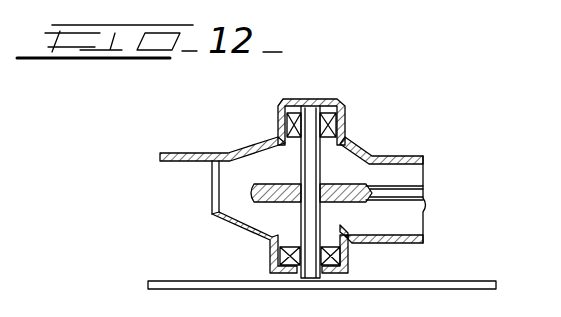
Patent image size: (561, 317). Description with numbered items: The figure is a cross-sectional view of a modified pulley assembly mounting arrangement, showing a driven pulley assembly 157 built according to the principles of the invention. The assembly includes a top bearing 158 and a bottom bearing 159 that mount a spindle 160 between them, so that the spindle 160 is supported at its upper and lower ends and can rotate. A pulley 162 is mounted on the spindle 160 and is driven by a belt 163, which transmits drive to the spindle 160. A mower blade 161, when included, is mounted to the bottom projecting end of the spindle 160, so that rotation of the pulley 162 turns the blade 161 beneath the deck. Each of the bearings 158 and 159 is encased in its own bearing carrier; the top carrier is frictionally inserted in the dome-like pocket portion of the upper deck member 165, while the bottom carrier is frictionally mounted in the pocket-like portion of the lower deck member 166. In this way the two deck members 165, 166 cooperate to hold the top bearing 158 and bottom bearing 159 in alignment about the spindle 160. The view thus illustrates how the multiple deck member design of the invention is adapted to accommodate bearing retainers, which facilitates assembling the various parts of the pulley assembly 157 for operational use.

The driven pulley assembly 157 is at (391, 130).
The top bearing 158 is at (343, 128).
The bottom bearing 159 is at (350, 258).
The spindle 160 is at (311, 160).
The mower blade 161 is at (459, 281).
The pulley 162 is at (293, 203).
The belt 163 is at (418, 190).
The upper deck member 165 is at (381, 152).
The lower deck member 166 is at (253, 242).